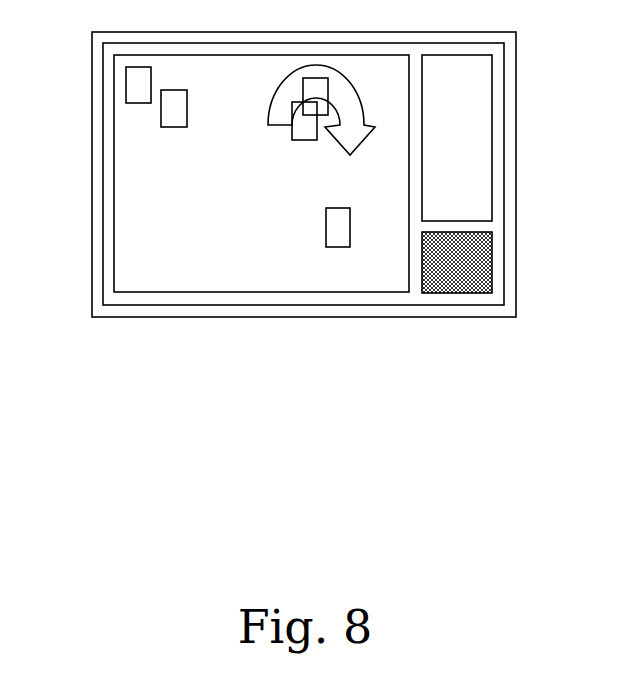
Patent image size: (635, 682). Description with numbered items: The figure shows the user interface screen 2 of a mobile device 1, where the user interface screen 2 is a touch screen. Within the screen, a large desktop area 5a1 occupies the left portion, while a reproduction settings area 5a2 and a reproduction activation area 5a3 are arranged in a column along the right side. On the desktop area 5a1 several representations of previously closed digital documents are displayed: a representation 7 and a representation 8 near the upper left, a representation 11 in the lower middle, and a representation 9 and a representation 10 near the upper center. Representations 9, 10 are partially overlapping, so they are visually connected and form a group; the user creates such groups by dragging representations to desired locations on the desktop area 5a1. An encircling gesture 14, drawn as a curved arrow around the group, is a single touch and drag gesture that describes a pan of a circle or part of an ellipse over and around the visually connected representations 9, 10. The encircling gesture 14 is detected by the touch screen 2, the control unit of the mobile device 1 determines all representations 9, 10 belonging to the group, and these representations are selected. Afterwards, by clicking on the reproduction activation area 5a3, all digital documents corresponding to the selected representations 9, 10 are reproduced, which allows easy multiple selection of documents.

The mobile device 1 is at (309, 228).
The user interface screen 2 is at (511, 115).
The desktop area 5a1 is at (113, 195).
The reproduction settings area 5a2 is at (482, 187).
The reproduction activation area 5a3 is at (493, 268).
The representation 7 is at (128, 95).
The representation 8 is at (173, 116).
The representation 9 is at (297, 123).
The representation 10 is at (321, 95).
The representation 11 is at (311, 237).
The encircling gesture 14 is at (350, 128).